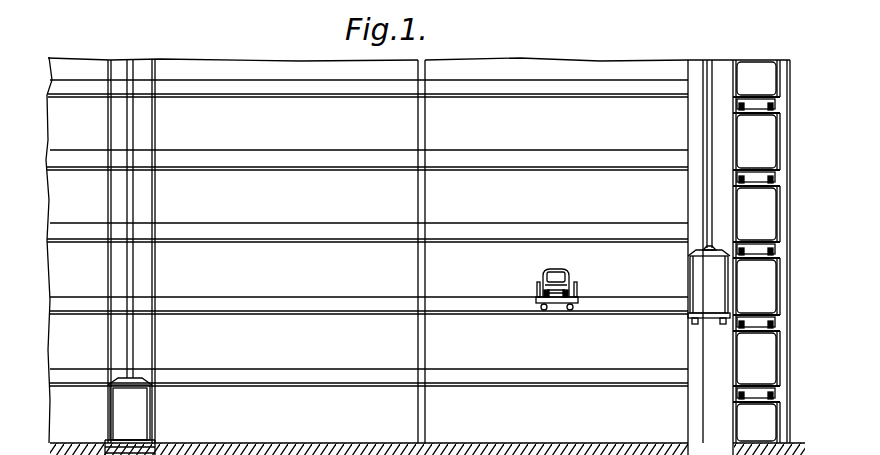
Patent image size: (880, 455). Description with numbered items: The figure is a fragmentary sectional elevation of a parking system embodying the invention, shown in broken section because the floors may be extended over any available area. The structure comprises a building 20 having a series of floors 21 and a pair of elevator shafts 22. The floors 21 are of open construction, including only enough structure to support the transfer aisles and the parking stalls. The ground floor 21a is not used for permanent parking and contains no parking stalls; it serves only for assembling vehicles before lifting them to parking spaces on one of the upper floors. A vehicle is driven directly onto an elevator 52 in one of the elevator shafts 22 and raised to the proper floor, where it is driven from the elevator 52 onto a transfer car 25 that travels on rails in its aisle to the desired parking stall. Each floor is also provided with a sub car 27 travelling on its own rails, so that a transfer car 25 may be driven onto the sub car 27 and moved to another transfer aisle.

The building 20 is at (782, 152).
The floors 21 is at (283, 168).
The ground floor 21a is at (499, 419).
The elevator shafts 22 is at (153, 343).
The transfer car 25 is at (580, 296).
The sub car 27 is at (748, 97).
The elevator 52 is at (153, 419).